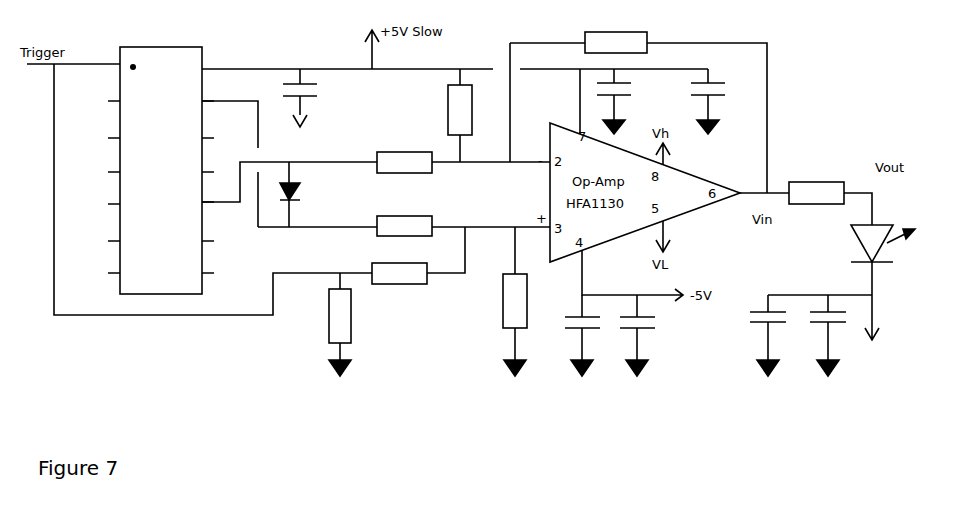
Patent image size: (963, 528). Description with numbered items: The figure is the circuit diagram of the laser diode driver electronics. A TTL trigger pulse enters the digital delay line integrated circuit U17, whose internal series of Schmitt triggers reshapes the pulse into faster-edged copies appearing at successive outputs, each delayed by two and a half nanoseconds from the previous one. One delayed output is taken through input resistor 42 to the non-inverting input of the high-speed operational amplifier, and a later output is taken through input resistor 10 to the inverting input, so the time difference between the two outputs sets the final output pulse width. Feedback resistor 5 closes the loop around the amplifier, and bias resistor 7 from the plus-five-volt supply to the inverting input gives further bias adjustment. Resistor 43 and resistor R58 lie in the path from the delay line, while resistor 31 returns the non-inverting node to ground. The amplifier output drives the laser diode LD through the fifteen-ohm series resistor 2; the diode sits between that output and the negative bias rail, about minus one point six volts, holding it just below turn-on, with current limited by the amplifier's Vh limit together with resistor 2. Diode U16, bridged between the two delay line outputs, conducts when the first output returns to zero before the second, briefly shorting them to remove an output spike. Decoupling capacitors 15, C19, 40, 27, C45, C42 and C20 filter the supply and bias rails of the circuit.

The resistor R3 2 is at (830, 194).
The feedback resistor R46 5 is at (638, 104).
The resistor R45 7 is at (435, 115).
The resistor R44 10 is at (404, 153).
The capacitor C26 15 is at (320, 106).
The capacitor C16 27 is at (573, 335).
The resistor R57 31 is at (491, 301).
The capacitor C28 40 is at (727, 101).
The resistor R47 42 is at (404, 217).
The resistor R56 43 is at (418, 265).
The delay line IC U17 50A-10250 U17 is at (155, 170).
The diode U16 is at (311, 194).
The resistor R58 470 R58 is at (323, 324).
The capacitor C19 0.1u C19 is at (630, 101).
The capacitor C45 10u C45 is at (652, 335).
The capacitor C42 10u C42 is at (760, 326).
The capacitor C20 0.1u C20 is at (833, 326).
The laser diode LD is at (860, 294).